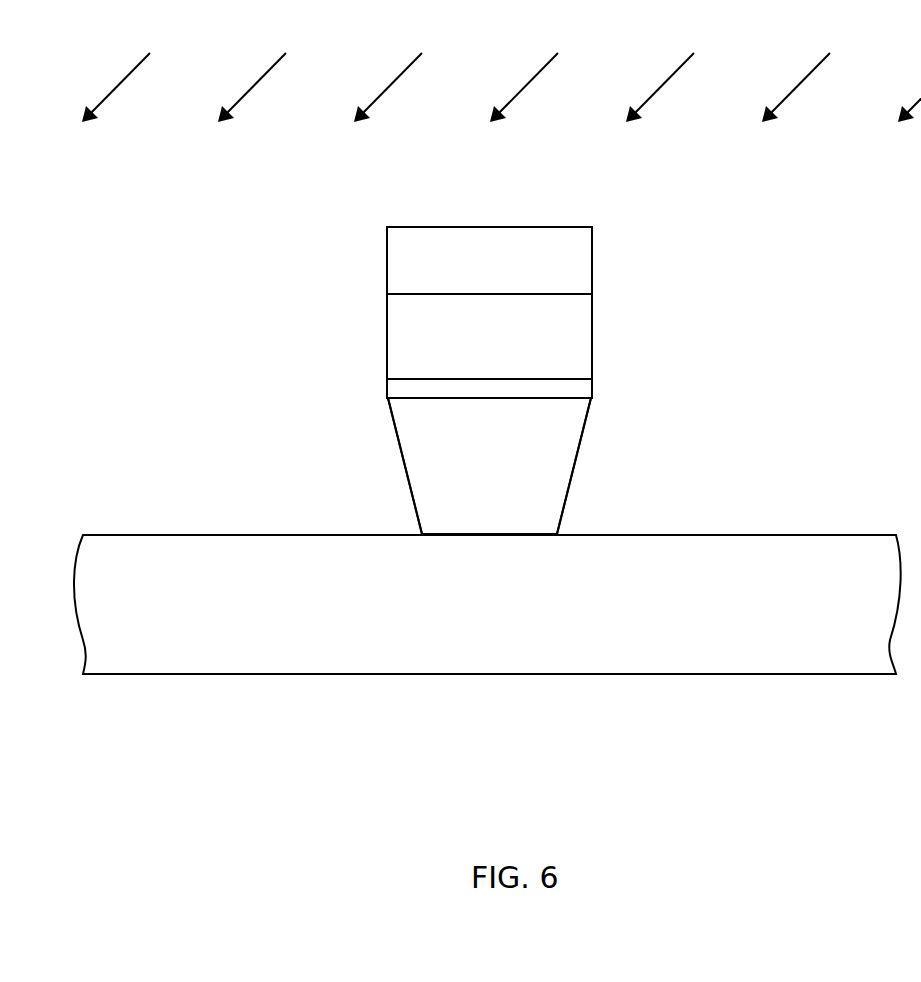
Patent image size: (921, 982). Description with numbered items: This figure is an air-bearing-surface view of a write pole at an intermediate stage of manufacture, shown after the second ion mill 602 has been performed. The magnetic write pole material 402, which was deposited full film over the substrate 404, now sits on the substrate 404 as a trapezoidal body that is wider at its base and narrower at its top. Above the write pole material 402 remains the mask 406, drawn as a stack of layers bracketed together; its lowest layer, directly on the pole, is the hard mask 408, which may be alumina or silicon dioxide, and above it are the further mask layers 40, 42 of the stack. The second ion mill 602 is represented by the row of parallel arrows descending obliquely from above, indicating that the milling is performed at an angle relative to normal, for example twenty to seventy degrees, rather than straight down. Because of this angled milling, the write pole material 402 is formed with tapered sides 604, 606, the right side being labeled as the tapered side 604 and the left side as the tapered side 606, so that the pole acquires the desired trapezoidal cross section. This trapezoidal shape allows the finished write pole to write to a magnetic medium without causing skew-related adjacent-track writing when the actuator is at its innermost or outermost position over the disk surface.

The second ion mill 602 is at (390, 83).
The substrate 404 is at (541, 603).
The write pole material 402 is at (535, 451).
The mask 406 is at (615, 227).
The hard mask 408 is at (473, 388).
The layer 40 is at (538, 336).
The layer 42 is at (541, 258).
The tapered side 604 is at (577, 463).
The tapered side 606 is at (402, 457).